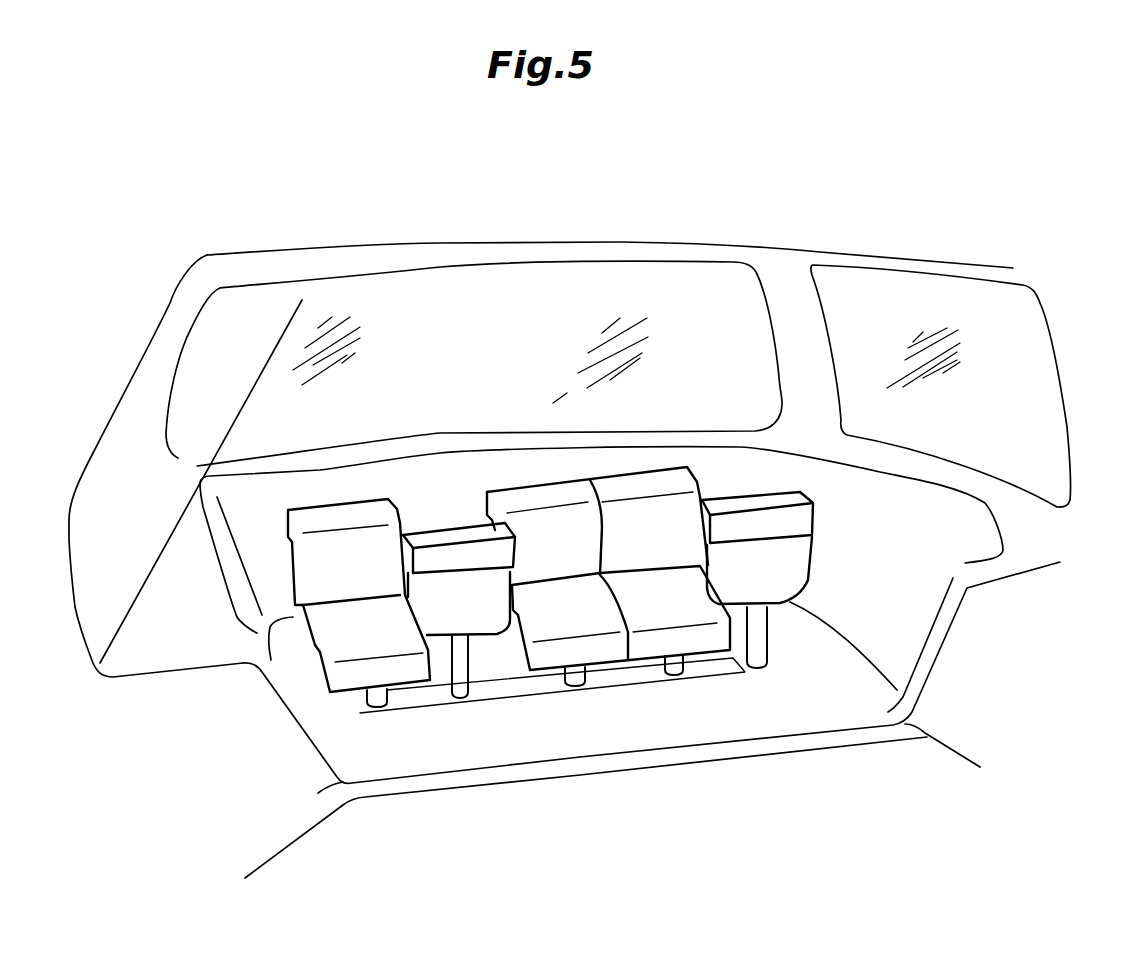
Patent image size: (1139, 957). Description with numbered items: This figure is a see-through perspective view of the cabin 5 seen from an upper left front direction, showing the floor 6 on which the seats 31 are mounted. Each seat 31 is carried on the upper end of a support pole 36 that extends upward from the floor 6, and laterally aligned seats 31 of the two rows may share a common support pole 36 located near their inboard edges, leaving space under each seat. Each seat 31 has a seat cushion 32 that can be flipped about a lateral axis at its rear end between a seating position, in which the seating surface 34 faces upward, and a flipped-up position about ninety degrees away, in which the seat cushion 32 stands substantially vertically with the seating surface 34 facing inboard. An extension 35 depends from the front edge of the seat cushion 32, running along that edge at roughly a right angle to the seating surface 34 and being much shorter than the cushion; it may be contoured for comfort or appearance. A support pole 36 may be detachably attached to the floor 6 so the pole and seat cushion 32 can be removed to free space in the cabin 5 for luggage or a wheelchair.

The cabin 5 is at (793, 303).
The floor 6 is at (822, 703).
The seat 31 is at (809, 571).
The seat cushion 32 is at (906, 580).
The seating surface 34 is at (342, 642).
The extension 35 is at (403, 677).
The support pole 36 is at (463, 663).